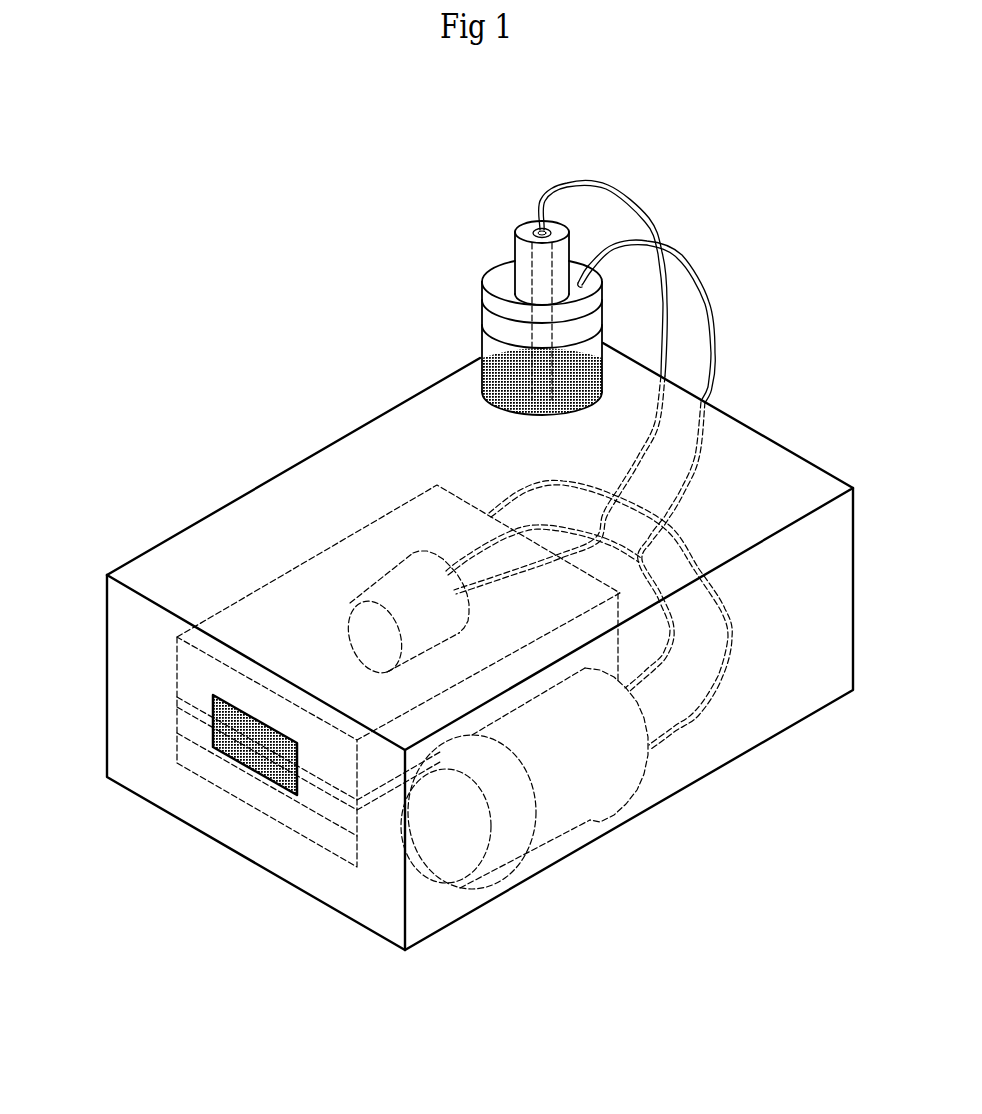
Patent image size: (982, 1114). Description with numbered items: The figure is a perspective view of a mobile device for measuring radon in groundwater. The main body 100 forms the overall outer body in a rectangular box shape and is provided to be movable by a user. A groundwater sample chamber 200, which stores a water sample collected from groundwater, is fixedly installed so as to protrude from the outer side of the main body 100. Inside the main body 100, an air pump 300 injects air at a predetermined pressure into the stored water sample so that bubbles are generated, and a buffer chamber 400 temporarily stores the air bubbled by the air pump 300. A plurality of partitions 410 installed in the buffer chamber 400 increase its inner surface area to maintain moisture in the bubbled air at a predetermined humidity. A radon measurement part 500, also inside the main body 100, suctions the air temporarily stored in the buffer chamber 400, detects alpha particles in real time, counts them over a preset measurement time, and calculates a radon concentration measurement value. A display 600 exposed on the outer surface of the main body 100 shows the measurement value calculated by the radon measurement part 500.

The main body 100 is at (262, 482).
The groundwater sample chamber 200 is at (502, 280).
The air pump 300 is at (408, 570).
The buffer chamber 400 is at (333, 853).
The partitions 410 is at (375, 797).
The radon measurement part 500 is at (598, 822).
The display 600 is at (250, 753).